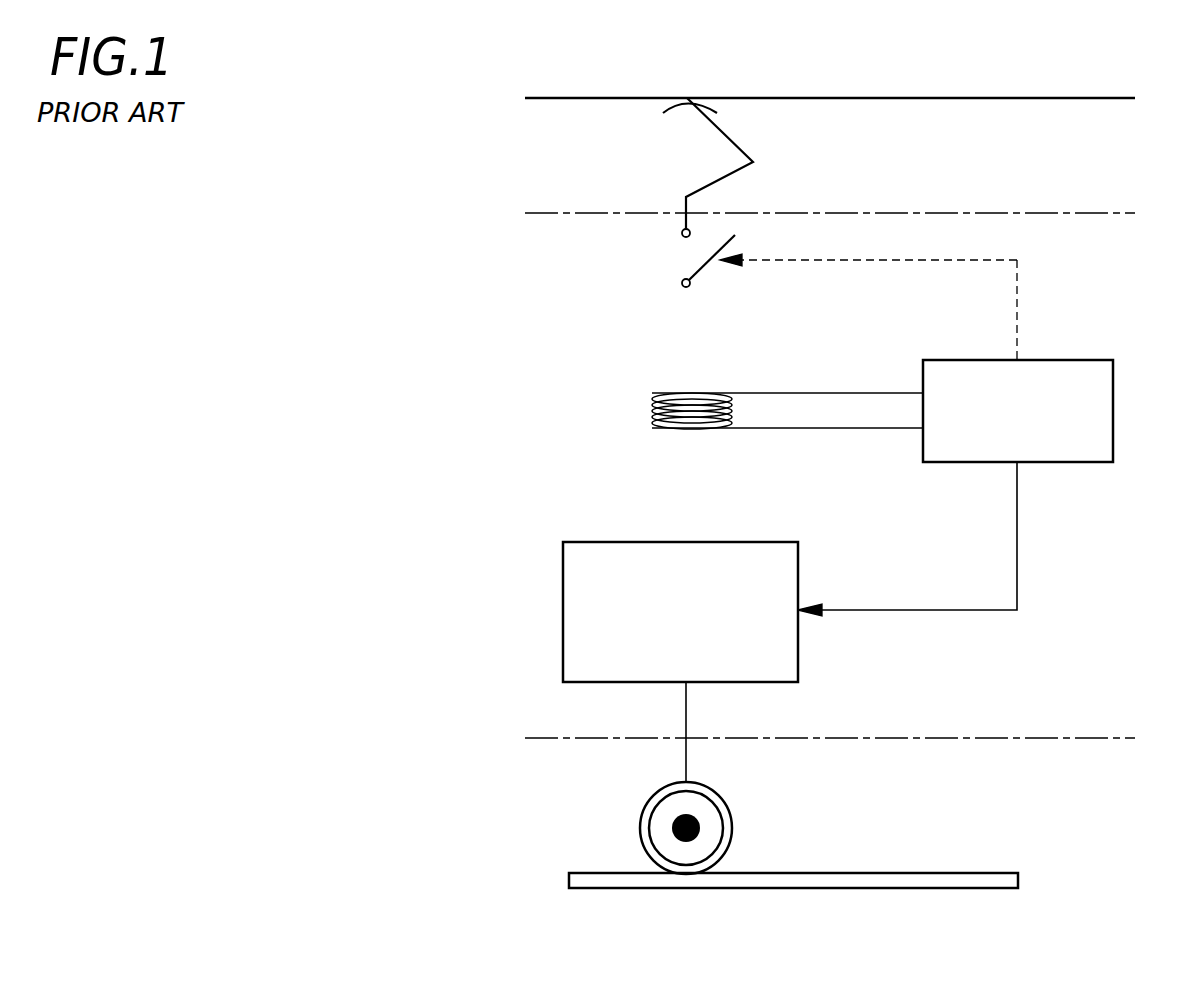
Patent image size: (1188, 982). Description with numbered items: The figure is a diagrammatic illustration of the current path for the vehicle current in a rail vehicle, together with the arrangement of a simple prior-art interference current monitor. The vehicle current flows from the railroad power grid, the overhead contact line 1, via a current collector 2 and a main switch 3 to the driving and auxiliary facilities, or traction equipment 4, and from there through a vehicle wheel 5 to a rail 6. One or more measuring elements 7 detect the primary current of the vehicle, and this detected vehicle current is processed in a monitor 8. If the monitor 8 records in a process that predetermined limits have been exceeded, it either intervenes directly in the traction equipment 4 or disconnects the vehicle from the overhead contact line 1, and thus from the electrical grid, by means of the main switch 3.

The railroad power grid (overhead contact line) 1 is at (848, 70).
The current collector 2 is at (725, 167).
The main switch 3 is at (826, 297).
The driving and auxiliary facilities (traction equipment) 4 is at (652, 662).
The vehicle wheel 5 is at (662, 828).
The rail 6 is at (793, 860).
The measuring element 7 is at (768, 410).
The monitor 8 is at (977, 488).